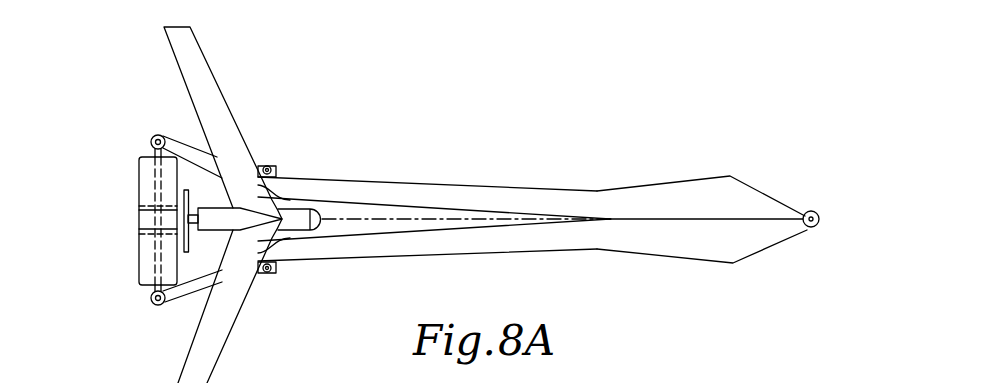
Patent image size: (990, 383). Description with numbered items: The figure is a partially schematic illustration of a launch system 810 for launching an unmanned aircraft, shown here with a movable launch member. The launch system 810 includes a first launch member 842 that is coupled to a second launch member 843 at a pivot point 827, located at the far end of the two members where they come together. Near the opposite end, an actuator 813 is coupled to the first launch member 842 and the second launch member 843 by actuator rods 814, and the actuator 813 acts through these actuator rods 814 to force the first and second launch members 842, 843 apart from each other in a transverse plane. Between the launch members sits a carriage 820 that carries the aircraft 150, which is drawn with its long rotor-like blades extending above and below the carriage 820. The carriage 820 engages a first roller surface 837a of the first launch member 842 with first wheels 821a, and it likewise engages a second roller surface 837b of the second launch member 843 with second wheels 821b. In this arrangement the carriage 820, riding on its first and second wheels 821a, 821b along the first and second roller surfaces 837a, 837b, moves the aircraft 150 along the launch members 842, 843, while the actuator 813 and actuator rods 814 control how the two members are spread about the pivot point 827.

The launch system 810 is at (647, 93).
The actuator 813 is at (138, 196).
The actuator rods 814 is at (152, 141).
The carriage 820 is at (300, 207).
The first wheels 821a is at (267, 163).
The second wheels 821b is at (267, 279).
The aircraft 150 is at (305, 198).
The first roller surface 837a is at (440, 184).
The second roller surface 837b is at (432, 256).
The first launch member 842 is at (503, 187).
The second launch member 843 is at (588, 251).
The pivot point 827 is at (819, 219).